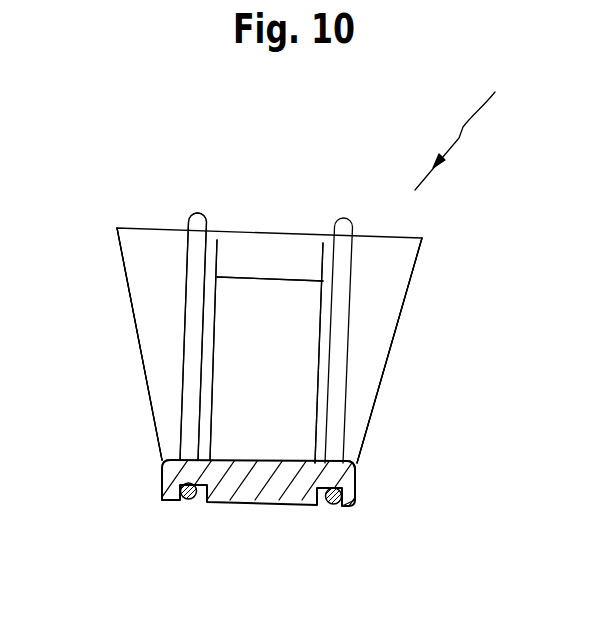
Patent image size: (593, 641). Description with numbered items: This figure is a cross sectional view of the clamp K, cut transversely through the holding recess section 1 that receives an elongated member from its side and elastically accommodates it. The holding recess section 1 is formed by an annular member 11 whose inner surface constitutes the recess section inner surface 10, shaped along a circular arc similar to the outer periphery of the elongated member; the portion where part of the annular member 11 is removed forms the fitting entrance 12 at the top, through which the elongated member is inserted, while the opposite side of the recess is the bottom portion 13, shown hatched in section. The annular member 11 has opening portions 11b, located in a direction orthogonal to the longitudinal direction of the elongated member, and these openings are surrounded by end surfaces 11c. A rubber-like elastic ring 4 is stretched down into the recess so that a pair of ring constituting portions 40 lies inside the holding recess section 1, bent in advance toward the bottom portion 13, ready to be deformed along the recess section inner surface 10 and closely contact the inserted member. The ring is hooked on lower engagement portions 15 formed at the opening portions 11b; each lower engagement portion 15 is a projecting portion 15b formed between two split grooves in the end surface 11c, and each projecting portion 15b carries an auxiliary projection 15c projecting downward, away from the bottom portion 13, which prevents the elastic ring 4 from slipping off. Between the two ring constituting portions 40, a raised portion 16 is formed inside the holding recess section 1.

The holding recess section 1 is at (288, 410).
The rubber-like elastic ring 4 is at (198, 274).
The ring constituting portions 40 is at (340, 275).
The recess section inner surface 10 is at (338, 465).
The annular member 11 is at (388, 340).
The opening portions 11b is at (143, 360).
The end surfaces 11c is at (145, 402).
The fitting entrance 12 is at (273, 255).
The bottom portion 13 is at (245, 502).
The lower engagement portions 15 is at (153, 457).
The projecting portion 15b is at (333, 477).
The auxiliary projections 15c is at (162, 498).
The raised portion 16 is at (273, 393).
The clamp K is at (459, 124).